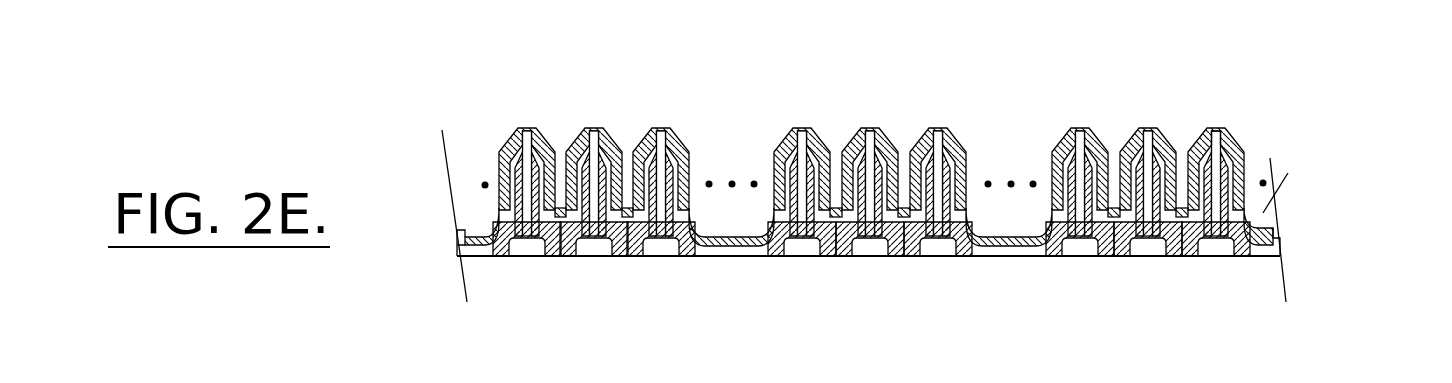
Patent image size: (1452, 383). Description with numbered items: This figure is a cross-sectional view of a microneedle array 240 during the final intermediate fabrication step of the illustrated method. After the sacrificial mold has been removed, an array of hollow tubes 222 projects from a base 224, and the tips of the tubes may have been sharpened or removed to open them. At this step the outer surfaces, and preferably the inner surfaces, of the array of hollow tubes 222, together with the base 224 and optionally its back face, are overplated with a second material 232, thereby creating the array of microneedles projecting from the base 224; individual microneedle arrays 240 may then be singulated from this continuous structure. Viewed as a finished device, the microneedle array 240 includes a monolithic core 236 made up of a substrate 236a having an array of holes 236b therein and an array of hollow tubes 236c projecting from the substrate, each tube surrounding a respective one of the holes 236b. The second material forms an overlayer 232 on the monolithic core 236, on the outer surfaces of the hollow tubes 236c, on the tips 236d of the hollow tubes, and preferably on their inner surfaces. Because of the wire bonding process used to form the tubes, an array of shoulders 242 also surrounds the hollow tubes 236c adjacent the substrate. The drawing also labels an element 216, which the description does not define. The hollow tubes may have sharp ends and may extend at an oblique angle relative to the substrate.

The array of hollow tubes 222 is at (920, 205).
The outer layer of microneedle 216 is at (1250, 156).
The base 224 is at (1298, 239).
The second material 232 is at (1304, 229).
The monolithic core 236 is at (868, 318).
The substrate 236a is at (525, 279).
The array of holes 236b is at (558, 272).
The array of hollow tubes 236c is at (582, 152).
The tips 236d is at (478, 139).
The microneedle arrays 240 is at (1405, 99).
The array of shoulders 242 is at (440, 209).